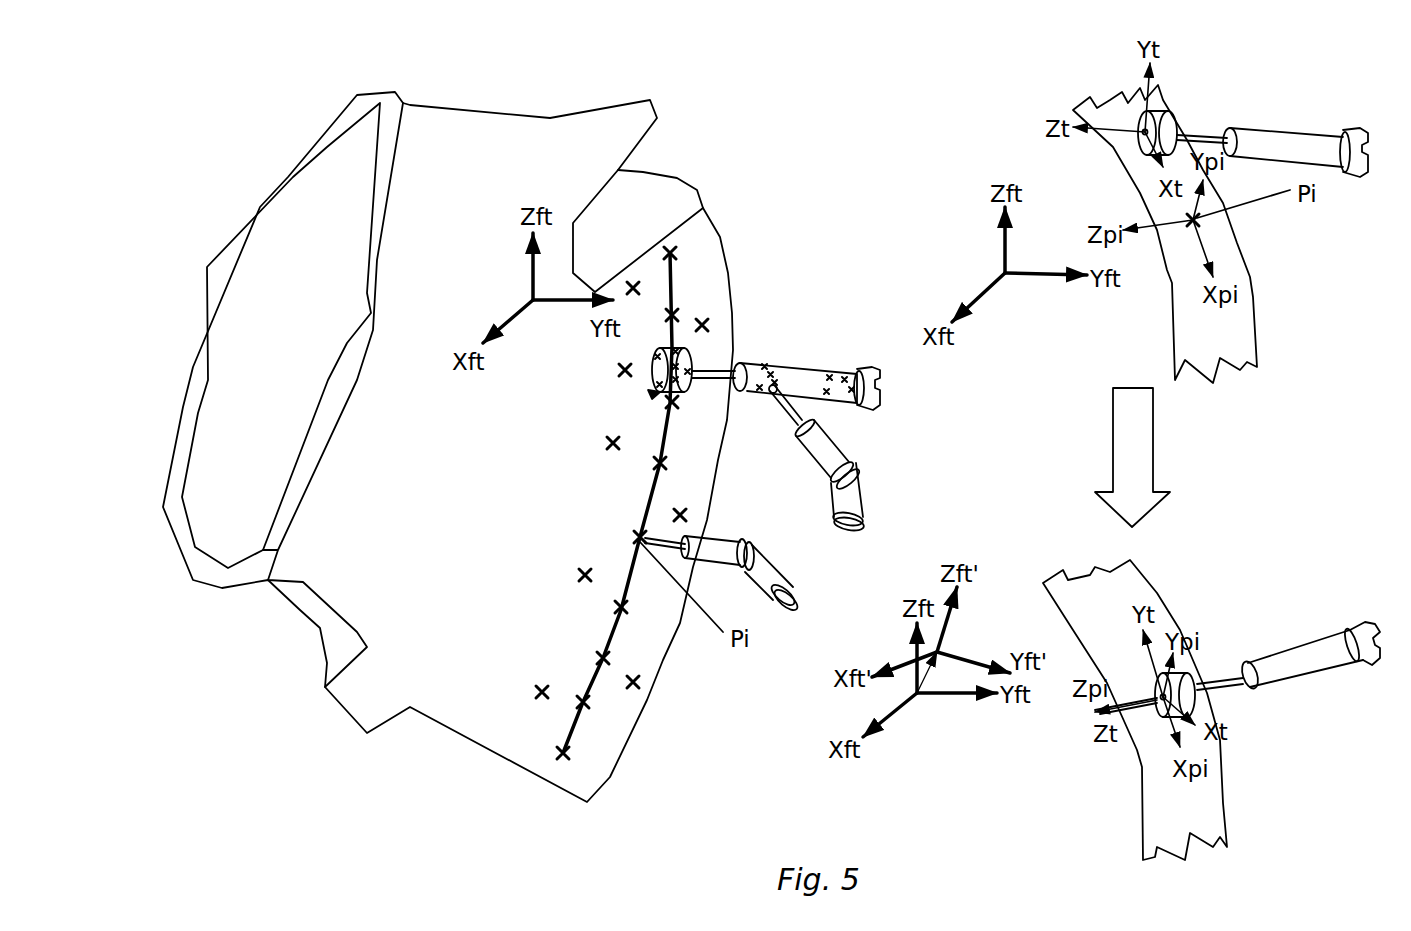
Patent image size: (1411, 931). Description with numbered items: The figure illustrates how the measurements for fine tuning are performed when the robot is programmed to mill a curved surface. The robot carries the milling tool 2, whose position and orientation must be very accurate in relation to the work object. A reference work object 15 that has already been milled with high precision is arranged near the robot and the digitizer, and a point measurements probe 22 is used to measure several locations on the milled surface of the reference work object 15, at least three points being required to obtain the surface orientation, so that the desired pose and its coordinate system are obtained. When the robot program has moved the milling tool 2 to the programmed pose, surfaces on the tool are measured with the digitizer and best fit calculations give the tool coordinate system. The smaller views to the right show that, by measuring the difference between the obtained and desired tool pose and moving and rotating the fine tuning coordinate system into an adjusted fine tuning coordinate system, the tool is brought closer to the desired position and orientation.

The milling tool 2 is at (692, 365).
The reference work object 15 is at (497, 732).
The point measurements probe 22 is at (717, 550).